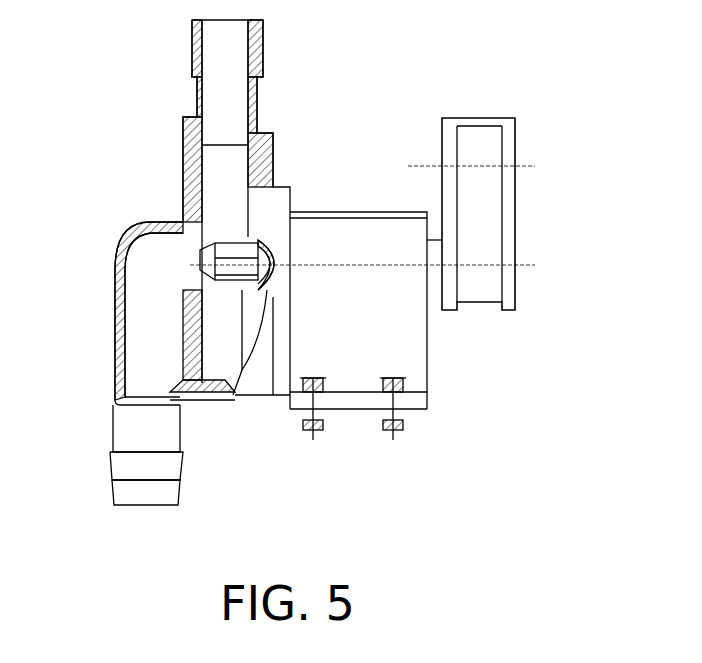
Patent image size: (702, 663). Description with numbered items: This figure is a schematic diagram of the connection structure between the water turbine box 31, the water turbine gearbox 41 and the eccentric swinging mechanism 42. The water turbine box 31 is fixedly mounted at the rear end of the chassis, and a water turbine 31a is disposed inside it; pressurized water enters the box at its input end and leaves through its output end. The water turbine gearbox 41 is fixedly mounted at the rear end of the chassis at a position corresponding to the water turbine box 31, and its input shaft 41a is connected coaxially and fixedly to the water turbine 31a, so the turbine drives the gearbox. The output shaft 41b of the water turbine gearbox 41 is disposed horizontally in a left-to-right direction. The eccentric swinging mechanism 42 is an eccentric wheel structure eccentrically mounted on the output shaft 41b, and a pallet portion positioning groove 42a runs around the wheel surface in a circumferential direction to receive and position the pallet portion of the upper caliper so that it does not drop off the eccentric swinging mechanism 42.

The water turbine box 31 is at (163, 222).
The water turbine 31a is at (233, 287).
The water turbine gearbox 41 is at (380, 248).
The input shaft 41a is at (280, 325).
The output shaft 41b is at (434, 272).
The eccentric swinging mechanism 42 is at (480, 135).
The pallet portion positioning groove 42a is at (480, 283).